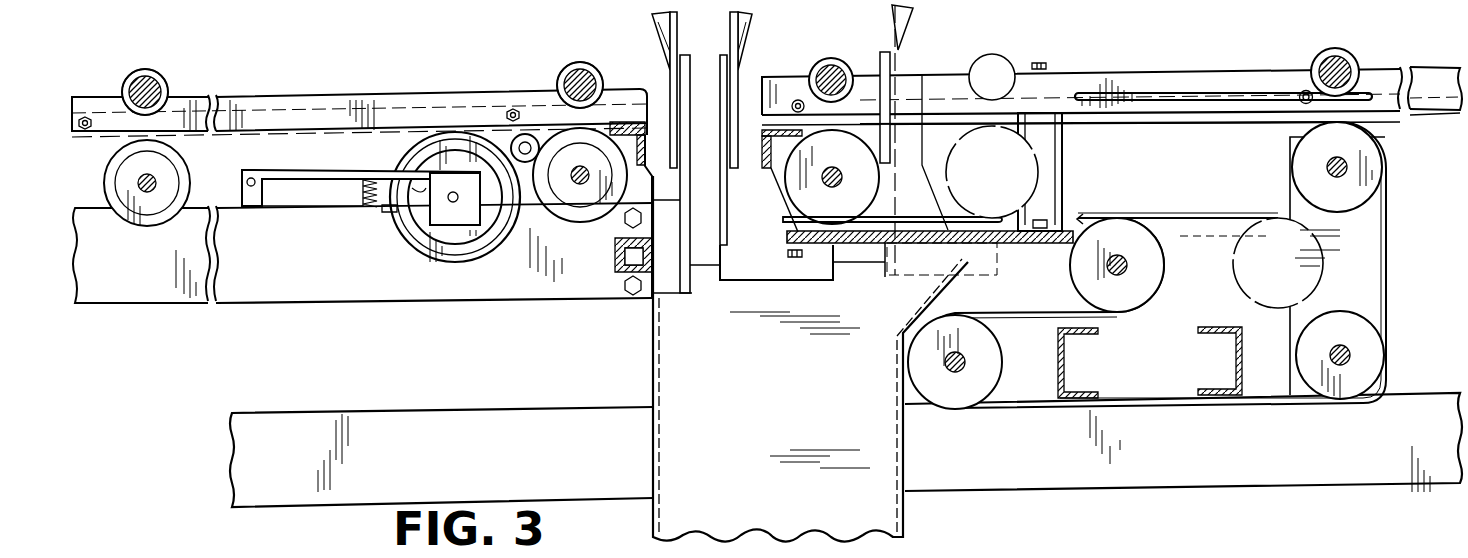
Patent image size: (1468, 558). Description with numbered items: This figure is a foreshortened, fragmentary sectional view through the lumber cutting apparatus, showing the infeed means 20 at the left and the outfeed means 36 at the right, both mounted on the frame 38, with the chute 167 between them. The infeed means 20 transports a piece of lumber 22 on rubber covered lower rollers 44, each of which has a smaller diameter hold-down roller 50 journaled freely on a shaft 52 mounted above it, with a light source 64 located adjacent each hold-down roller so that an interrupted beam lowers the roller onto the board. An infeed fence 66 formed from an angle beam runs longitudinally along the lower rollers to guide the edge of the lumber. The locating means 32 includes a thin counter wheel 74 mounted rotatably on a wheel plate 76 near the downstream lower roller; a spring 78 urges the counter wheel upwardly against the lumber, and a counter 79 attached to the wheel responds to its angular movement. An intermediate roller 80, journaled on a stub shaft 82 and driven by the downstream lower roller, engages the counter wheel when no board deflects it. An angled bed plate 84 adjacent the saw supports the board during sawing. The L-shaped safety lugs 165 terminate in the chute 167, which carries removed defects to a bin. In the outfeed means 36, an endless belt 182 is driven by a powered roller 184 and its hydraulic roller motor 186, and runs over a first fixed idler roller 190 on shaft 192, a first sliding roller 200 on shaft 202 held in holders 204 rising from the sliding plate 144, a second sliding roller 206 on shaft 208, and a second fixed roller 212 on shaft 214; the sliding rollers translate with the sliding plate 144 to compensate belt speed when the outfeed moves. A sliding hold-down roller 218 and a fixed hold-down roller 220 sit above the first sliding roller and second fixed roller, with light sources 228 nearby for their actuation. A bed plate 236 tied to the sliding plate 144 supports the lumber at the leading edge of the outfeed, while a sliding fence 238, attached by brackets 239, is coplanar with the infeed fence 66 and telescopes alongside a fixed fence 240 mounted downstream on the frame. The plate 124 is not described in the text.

The infeed means 20 is at (250, 86).
The piece of lumber 22 is at (422, 107).
The locating means 32 is at (486, 279).
The outfeed means 36 is at (1182, 62).
The frame 38 is at (238, 291).
The lower rollers 44 is at (110, 186).
The hold-down roller 50 is at (162, 76).
The shaft 52 is at (143, 78).
The light source 64 is at (85, 130).
The infeed fence 66 is at (230, 100).
The counter wheel 74 is at (452, 258).
The wheel plate 76 is at (322, 172).
The spring 78 is at (362, 192).
The counter 79 is at (437, 212).
The intermediate roller 80 is at (527, 138).
The stub shaft 82 is at (520, 138).
The bed plate 84 is at (626, 122).
The guide plate 124 is at (742, 62).
The sliding plate 144 is at (1024, 238).
The safety lugs 165 is at (686, 56).
The chute 167 is at (866, 498).
The endless belt 182 is at (1175, 214).
The powered roller 184 is at (982, 345).
The hydraulic roller motor 186 is at (1008, 378).
The first fixed idler roller 190 is at (1310, 343).
The shaft 192 is at (1330, 356).
The first sliding roller 200 is at (962, 190).
The shaft 202 is at (834, 167).
The holders 204 is at (787, 234).
The second sliding roller 206 is at (1240, 282).
The shaft 208 is at (1108, 266).
The second fixed roller 212 is at (1302, 154).
The shaft 214 is at (1328, 168).
The sliding hold-down roller 218 is at (836, 60).
The fixed hold-down roller 220 is at (1334, 48).
The light sources 228 is at (797, 100).
The bed plate 236 is at (768, 172).
The sliding fence 238 is at (1420, 70).
The brackets 239 is at (1062, 172).
The fixed fence 240 is at (1452, 101).